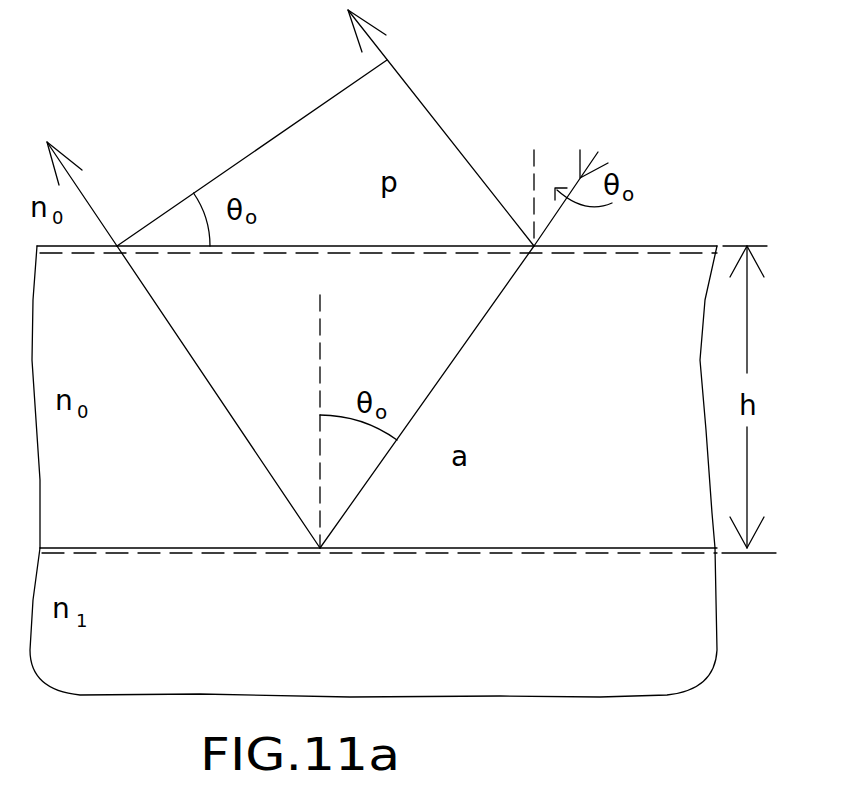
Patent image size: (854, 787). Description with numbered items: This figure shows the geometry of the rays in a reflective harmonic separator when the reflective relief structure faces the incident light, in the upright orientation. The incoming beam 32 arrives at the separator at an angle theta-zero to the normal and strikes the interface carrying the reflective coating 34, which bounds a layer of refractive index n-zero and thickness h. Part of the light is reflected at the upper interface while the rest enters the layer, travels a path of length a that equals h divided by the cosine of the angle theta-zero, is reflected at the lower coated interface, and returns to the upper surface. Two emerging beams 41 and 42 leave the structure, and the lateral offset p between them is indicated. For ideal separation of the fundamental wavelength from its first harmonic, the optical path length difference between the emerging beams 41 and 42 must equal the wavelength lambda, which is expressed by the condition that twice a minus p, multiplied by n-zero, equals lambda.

The incoming beam 32 is at (598, 152).
The reflective coating 34 is at (348, 246).
The emerging beam 41 is at (404, 81).
The emerging beam 42 is at (84, 197).